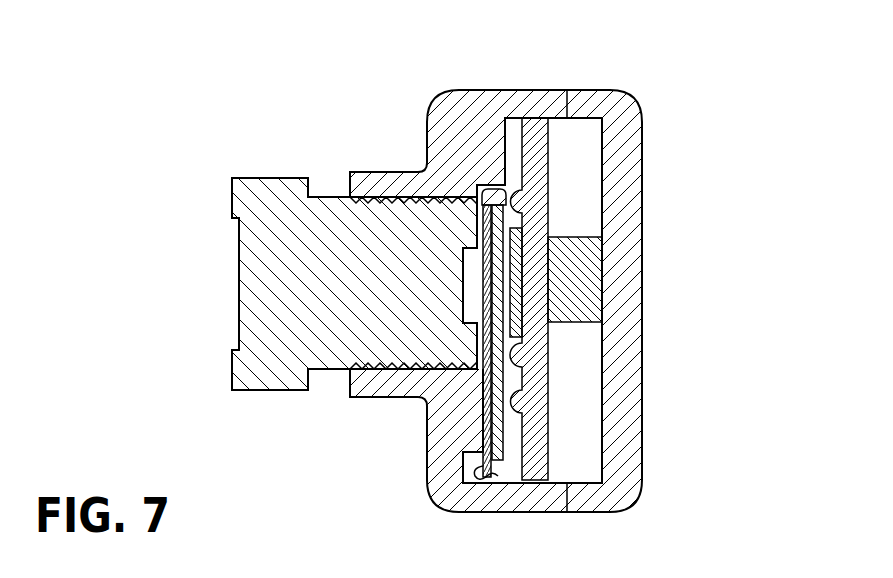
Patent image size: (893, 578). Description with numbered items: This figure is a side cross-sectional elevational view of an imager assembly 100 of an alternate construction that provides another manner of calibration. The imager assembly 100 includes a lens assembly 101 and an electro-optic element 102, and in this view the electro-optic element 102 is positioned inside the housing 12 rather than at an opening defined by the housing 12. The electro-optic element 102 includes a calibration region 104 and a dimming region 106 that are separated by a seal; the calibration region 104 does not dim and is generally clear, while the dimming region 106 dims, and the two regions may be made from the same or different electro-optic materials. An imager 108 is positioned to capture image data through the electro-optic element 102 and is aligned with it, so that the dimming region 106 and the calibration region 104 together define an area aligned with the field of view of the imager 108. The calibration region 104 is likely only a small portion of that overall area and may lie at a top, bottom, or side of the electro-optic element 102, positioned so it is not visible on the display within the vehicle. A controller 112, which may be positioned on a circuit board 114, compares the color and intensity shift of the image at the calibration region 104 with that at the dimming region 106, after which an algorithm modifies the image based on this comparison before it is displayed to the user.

The imager assembly 100 is at (714, 113).
The housing 12 is at (538, 89).
The lens assembly 101 is at (265, 177).
The calibration region 104 is at (477, 248).
The dimming region 106 is at (492, 284).
The electro-optic element 102 is at (487, 433).
The imager 108 is at (547, 233).
The controller 112 is at (570, 293).
The circuit board 114 is at (547, 377).